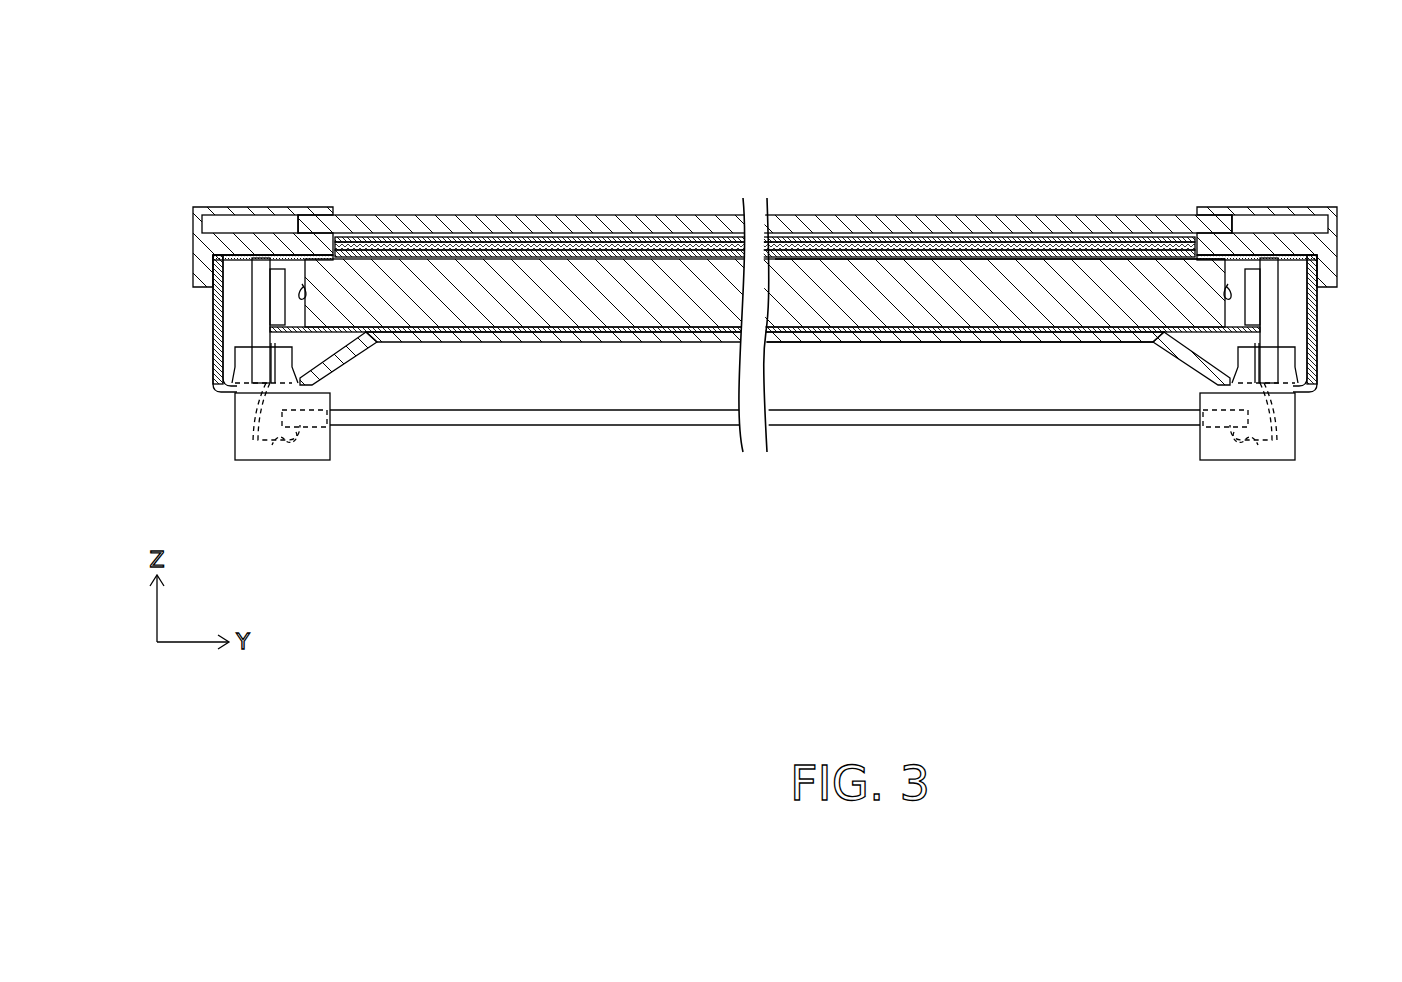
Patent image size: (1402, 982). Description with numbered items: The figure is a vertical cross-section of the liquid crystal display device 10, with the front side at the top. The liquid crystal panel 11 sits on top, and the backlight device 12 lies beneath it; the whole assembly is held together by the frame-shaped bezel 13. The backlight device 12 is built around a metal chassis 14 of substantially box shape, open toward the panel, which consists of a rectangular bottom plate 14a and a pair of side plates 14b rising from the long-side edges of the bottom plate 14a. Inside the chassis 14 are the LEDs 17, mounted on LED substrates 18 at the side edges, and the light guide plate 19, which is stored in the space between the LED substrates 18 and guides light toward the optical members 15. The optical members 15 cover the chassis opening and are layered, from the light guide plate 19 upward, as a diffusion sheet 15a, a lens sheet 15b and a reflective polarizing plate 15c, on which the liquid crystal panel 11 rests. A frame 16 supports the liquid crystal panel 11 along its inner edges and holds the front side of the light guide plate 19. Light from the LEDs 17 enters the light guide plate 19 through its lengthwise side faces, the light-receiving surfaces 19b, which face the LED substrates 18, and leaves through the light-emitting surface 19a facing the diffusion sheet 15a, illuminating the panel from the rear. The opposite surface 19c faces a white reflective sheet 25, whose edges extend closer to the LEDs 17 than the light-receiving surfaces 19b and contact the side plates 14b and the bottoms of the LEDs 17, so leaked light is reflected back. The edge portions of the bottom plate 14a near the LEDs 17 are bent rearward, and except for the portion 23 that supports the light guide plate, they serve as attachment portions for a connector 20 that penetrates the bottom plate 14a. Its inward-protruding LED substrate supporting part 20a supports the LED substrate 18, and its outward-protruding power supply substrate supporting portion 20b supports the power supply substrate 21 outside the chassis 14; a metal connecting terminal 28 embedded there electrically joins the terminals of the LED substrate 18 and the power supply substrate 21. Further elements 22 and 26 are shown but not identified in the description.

The liquid crystal display device 10 is at (912, 108).
The liquid crystal panel 11 is at (542, 214).
The backlight device 12 is at (710, 508).
The bezel 13 is at (258, 207).
The chassis 14 is at (765, 429).
The bottom plate 14a is at (765, 429).
The side plate 14b is at (218, 312).
The optical members 15 is at (765, 166).
The diffusion sheet 15a is at (672, 254).
The lens sheet 15b is at (624, 246).
The reflective polarizing plate 15c is at (590, 239).
The frame 16 is at (233, 242).
The LED 17 is at (277, 268).
The LED substrate 18 is at (261, 287).
The light guide plate 19 is at (888, 290).
The light-emitting surface 19a is at (828, 256).
The light-receiving surface 19b is at (303, 287).
The opposite surface 19c is at (838, 343).
The connector 20 is at (759, 438).
The LED substrate supporting part 20a is at (237, 360).
The power supply substrate supporting portion 20b is at (237, 440).
The power supply substrate 21 is at (588, 426).
The adhesive tape 22 is at (293, 262).
The portion that supports the light guide plate 23 is at (665, 333).
The reflective sheet 25 is at (810, 333).
The inclined plate 26 is at (335, 380).
The connecting terminal 28 is at (258, 445).